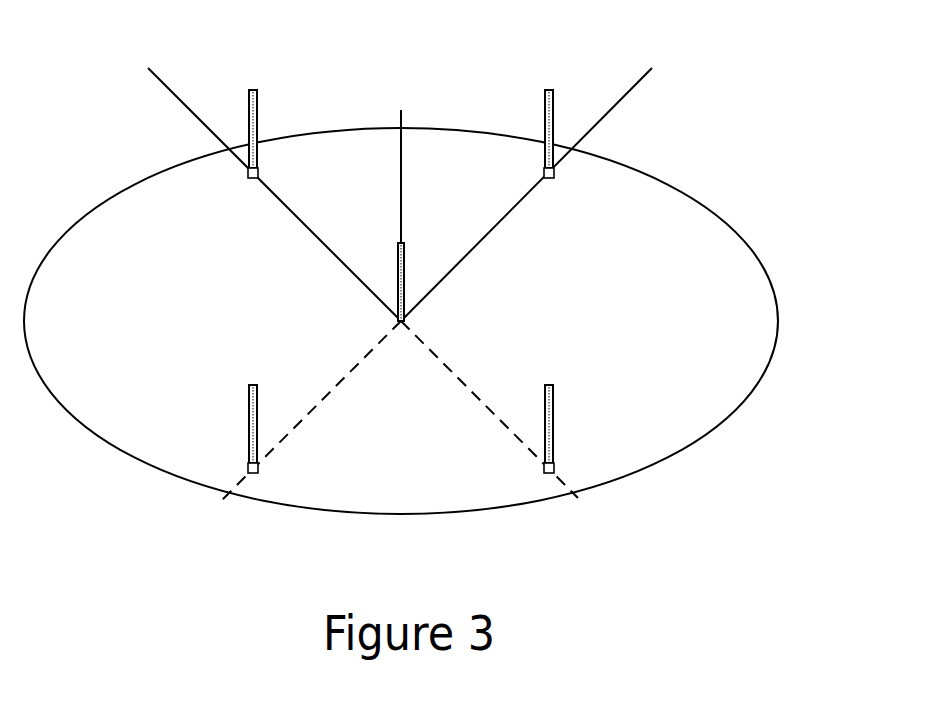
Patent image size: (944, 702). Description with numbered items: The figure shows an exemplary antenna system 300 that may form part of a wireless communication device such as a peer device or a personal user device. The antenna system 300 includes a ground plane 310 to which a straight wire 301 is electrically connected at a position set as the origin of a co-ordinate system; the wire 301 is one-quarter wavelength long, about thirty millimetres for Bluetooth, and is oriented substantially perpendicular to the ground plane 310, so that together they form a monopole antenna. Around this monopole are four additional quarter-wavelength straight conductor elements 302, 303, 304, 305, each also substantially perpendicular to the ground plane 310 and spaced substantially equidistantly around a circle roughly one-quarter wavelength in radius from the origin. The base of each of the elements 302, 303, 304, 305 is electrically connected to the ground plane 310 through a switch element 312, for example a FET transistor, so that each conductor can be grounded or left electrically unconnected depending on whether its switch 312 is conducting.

The antenna system 300 is at (444, 311).
The straight wire 301 is at (404, 256).
The quarter-wavelength conductor element 302 is at (553, 105).
The quarter-wavelength conductor element 303 is at (258, 105).
The quarter-wavelength conductor element 304 is at (257, 400).
The quarter-wavelength conductor element 305 is at (553, 403).
The ground plane 310 is at (675, 436).
The switch element 312 is at (541, 472).